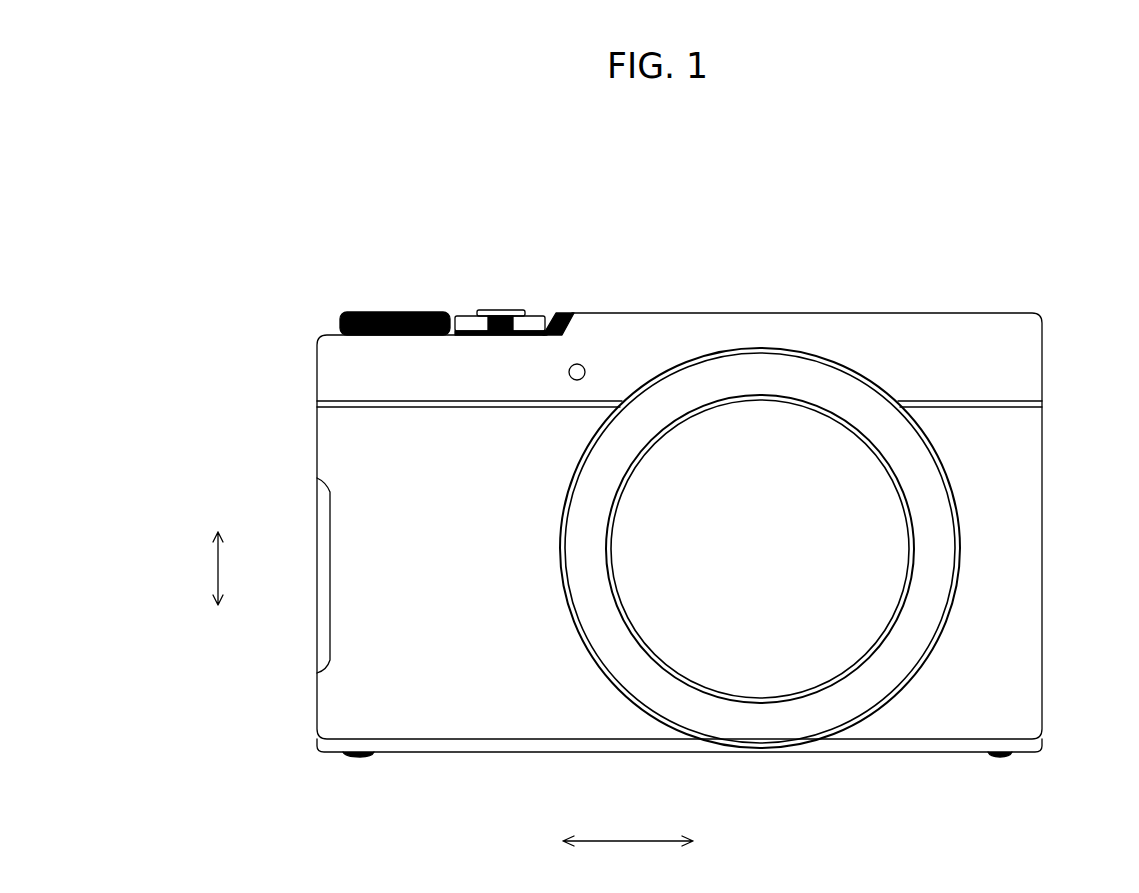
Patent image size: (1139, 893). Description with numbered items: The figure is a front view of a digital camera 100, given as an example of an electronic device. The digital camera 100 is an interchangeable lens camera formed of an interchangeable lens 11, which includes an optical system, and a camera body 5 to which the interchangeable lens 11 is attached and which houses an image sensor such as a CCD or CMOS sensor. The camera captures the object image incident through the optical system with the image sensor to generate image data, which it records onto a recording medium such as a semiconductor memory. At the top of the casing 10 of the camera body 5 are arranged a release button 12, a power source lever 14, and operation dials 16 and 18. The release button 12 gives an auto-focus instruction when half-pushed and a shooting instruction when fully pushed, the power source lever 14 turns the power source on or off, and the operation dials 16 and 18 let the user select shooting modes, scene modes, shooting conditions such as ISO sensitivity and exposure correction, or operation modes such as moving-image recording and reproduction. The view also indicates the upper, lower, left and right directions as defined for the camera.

The digital camera 100 is at (346, 213).
The camera body 5 is at (1043, 582).
The casing 10 is at (412, 715).
The interchangeable lens 11 is at (850, 712).
The release button 12 is at (506, 308).
The power source lever 14 is at (470, 312).
The operation dial 16 is at (391, 312).
The operation dial 18 is at (576, 312).